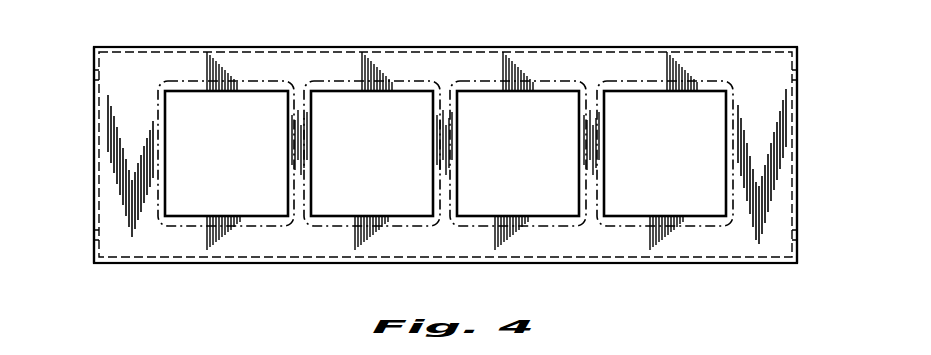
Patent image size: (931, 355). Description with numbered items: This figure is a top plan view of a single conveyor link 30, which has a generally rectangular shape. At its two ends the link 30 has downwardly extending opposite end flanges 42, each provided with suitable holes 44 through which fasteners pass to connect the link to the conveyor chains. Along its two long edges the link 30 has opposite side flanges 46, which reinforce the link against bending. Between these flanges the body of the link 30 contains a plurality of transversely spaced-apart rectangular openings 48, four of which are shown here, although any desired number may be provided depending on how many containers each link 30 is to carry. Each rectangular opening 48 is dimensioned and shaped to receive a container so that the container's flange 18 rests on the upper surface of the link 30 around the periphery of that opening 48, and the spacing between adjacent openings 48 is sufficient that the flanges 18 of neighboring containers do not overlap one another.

The flange 18 is at (235, 70).
The link 30 is at (597, 55).
The end flange 42 is at (94, 145).
The hole 44 is at (94, 74).
The side flange 46 is at (380, 50).
The rectangular opening 48 is at (208, 93).